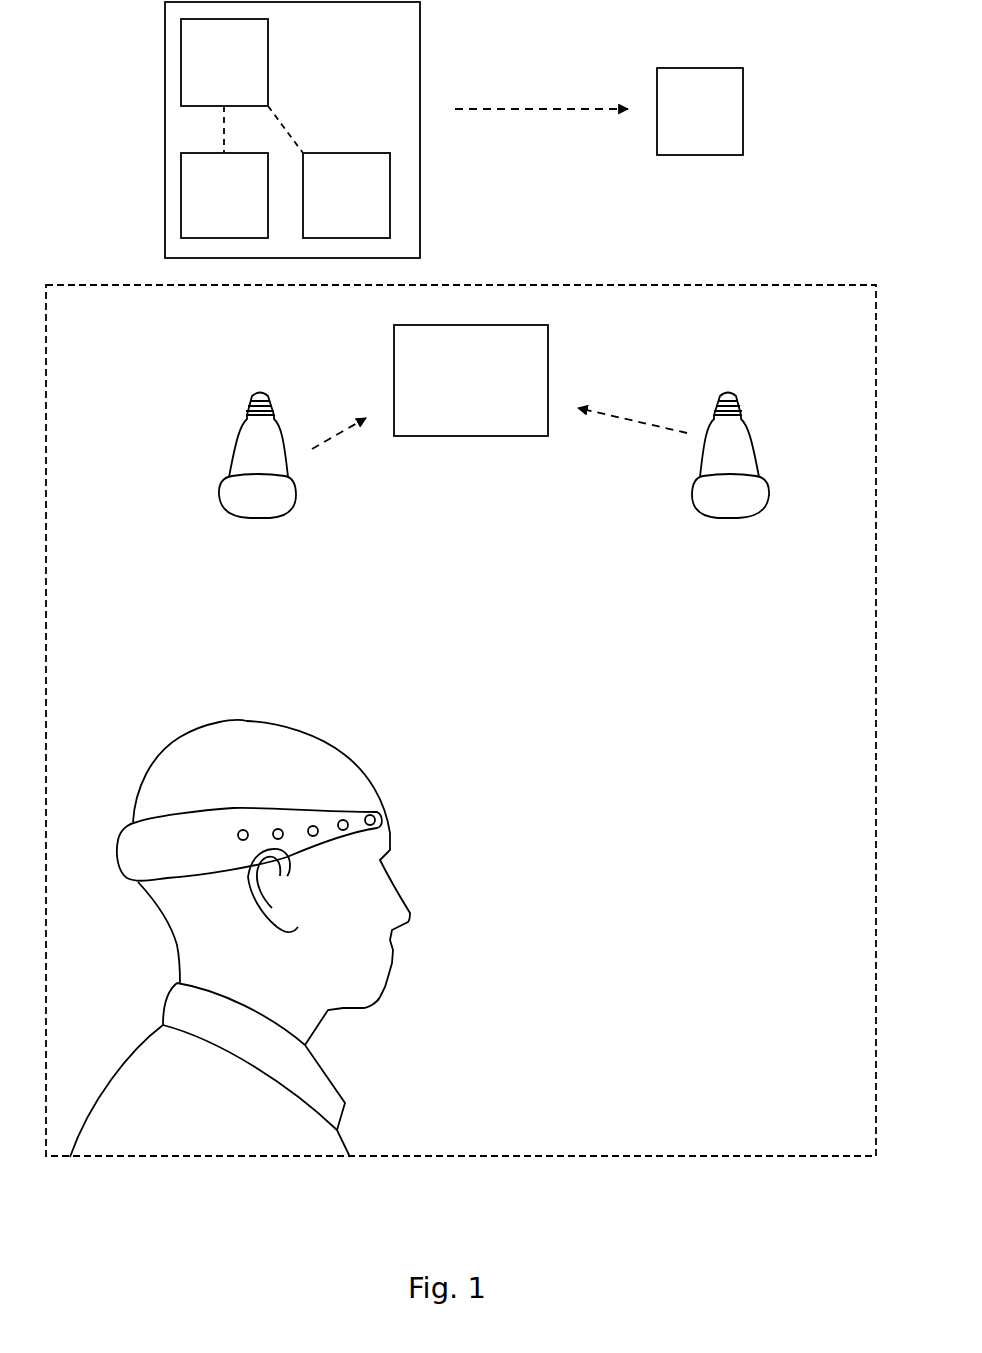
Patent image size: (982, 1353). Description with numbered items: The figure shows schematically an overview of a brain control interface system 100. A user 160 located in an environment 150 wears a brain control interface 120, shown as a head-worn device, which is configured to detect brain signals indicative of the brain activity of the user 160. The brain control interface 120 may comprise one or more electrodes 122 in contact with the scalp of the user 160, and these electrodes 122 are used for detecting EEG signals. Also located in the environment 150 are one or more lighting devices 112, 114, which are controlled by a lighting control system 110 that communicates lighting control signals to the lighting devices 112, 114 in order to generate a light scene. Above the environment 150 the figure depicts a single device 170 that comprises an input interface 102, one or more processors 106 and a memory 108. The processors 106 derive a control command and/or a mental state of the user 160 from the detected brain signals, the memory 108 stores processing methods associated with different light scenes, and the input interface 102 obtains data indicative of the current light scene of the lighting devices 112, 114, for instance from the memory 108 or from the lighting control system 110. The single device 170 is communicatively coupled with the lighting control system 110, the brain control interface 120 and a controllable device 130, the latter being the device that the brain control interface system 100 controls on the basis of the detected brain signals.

The brain control interface system 100 is at (526, 666).
The input interface 102 is at (195, 215).
The processors 106 is at (180, 58).
The memory 108 is at (382, 198).
The single device 170 is at (403, 55).
The controllable device 130 is at (722, 116).
The environment 150 is at (461, 720).
The lighting control system 110 is at (540, 352).
The lighting device 112 is at (242, 505).
The lighting device 114 is at (732, 505).
The brain control interface 120 is at (142, 840).
The electrodes 122 is at (334, 792).
The user 160 is at (396, 1045).